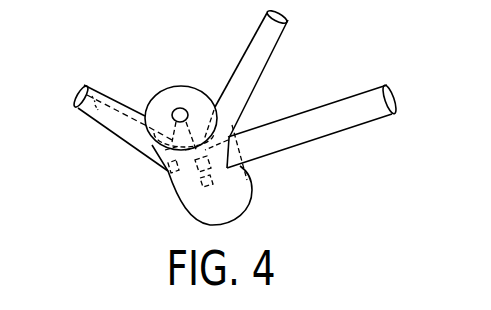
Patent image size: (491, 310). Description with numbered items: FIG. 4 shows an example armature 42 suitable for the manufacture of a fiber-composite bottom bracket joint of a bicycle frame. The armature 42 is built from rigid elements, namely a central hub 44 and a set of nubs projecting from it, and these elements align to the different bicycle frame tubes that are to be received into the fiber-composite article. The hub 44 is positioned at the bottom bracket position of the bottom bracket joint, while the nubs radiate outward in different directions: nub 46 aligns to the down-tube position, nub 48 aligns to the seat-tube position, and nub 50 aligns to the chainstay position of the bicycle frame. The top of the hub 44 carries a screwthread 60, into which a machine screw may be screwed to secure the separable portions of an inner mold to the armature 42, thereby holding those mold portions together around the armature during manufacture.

The armature 42 is at (90, 167).
The hub 44 is at (203, 218).
The nub 46 is at (357, 118).
The nub 48 is at (263, 50).
The nub 50 is at (106, 127).
The screwthread 60 is at (179, 109).